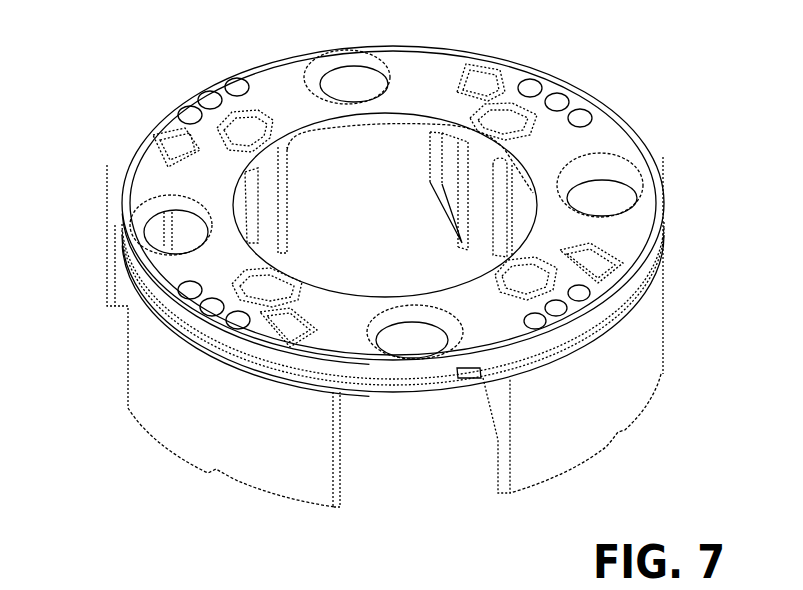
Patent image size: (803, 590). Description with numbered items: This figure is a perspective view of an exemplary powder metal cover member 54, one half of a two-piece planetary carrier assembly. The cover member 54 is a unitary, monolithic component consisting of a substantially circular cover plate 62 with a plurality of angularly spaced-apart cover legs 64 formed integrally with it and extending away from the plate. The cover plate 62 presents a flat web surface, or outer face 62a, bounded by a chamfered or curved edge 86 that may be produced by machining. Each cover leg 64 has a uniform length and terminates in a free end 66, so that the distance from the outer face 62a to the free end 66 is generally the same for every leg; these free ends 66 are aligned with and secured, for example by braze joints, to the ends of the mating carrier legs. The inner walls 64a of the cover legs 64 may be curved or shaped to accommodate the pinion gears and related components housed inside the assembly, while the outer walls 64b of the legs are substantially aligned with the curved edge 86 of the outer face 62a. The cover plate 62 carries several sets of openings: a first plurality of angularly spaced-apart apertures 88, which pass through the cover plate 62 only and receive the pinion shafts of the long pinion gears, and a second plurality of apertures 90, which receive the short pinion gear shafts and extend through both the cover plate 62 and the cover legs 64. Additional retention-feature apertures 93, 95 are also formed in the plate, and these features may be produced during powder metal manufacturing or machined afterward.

The cover member 54 is at (98, 88).
The cover plate 62 is at (428, 64).
The outer face 62a is at (172, 277).
The cover legs 64 is at (90, 252).
The inner walls 64a is at (453, 170).
The outer walls 64b is at (640, 350).
The free end 66 is at (312, 508).
The curved edge 86 is at (125, 171).
The first plurality of apertures 88 is at (342, 66).
The second plurality of apertures 90 is at (228, 137).
The apertures 93 is at (606, 258).
The apertures 95 is at (552, 99).